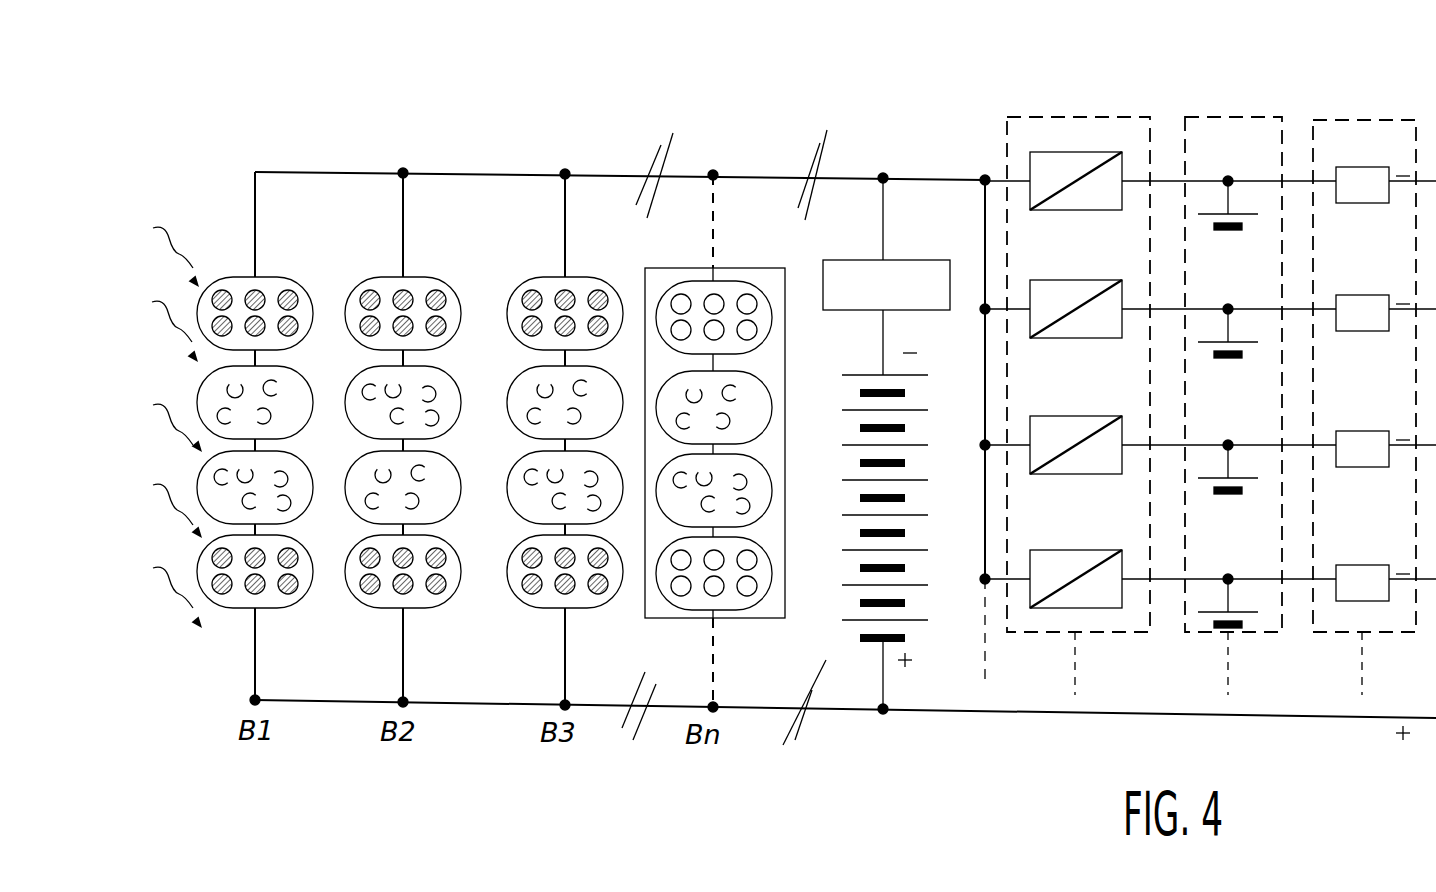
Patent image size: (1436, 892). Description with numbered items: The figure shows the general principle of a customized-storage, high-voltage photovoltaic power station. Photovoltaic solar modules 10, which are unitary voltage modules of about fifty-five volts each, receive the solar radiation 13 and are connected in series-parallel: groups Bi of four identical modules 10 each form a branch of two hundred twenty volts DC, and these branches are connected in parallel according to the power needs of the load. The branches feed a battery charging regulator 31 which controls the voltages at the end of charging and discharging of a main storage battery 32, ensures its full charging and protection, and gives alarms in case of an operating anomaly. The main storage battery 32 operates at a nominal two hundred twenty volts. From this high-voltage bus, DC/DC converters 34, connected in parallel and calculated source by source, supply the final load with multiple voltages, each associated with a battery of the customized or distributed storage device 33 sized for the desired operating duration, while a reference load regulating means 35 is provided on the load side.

The photovoltaic solar modules 10 is at (283, 283).
The solar radiation 13 is at (173, 242).
The battery charging regulator 31 is at (925, 268).
The main storage battery 32 is at (922, 436).
The customized or distributed storage device 33 is at (1225, 117).
The DC/DC converters 34 is at (1085, 117).
The reference load regulating means 35 is at (1357, 120).